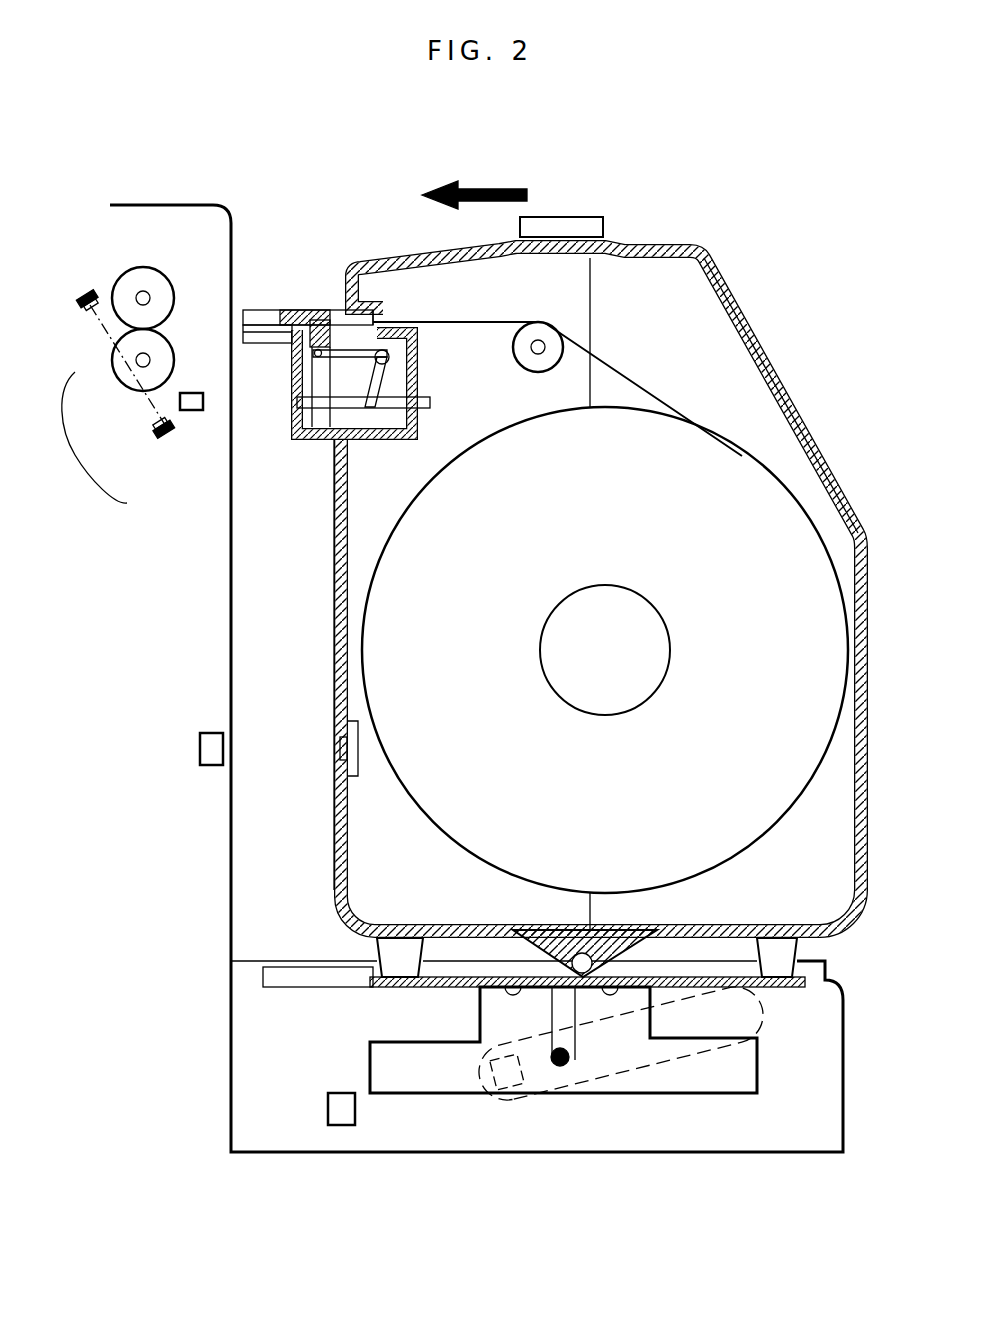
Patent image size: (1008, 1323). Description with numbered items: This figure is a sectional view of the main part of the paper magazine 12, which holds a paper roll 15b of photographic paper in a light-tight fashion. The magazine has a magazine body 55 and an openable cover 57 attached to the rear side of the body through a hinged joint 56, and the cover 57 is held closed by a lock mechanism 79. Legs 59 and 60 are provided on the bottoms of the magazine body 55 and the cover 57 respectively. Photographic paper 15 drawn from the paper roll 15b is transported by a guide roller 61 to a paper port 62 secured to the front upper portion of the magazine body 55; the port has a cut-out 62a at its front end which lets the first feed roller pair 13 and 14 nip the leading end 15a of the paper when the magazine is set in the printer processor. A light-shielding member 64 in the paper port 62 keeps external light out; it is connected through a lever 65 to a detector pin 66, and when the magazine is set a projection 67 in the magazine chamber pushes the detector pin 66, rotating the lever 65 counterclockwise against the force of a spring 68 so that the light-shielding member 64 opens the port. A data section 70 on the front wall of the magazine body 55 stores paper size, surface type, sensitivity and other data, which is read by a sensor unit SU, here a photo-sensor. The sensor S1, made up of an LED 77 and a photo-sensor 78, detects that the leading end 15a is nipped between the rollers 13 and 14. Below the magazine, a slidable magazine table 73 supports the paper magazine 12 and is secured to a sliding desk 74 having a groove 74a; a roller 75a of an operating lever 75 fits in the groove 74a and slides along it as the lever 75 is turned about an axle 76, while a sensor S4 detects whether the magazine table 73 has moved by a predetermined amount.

The paper magazine 12 is at (664, 232).
The first feed roller 13 is at (168, 362).
The first feed roller 14 is at (162, 280).
The photographic paper 15 is at (647, 383).
The leading end 15a is at (262, 343).
The paper roll 15b is at (800, 557).
The magazine body 55 is at (332, 520).
The hinged joint 56 is at (583, 935).
The openable cover 57 is at (762, 343).
The leg 59 is at (397, 960).
The leg 60 is at (778, 950).
The guide roller 61 is at (523, 342).
The paper port 62 is at (305, 310).
The cut-out 62a is at (253, 310).
The light-shielding member 64 is at (315, 325).
The lever 65 is at (387, 380).
The detector pin 66 is at (297, 397).
The projection 67 is at (192, 410).
The spring 68 is at (387, 353).
The data section 70 is at (336, 745).
The magazine table 73 is at (400, 985).
The sliding desk 74 is at (430, 1080).
The groove 74a is at (573, 1012).
The operating lever 75 is at (750, 1018).
The roller 75a is at (573, 1067).
The axle 76 is at (508, 1090).
The LED 77 is at (83, 310).
The photo-sensor 78 is at (157, 420).
The lock mechanism 79 is at (583, 222).
The sensor S1 is at (83, 437).
The sensor unit SU is at (200, 750).
The sensor S4 is at (343, 1125).